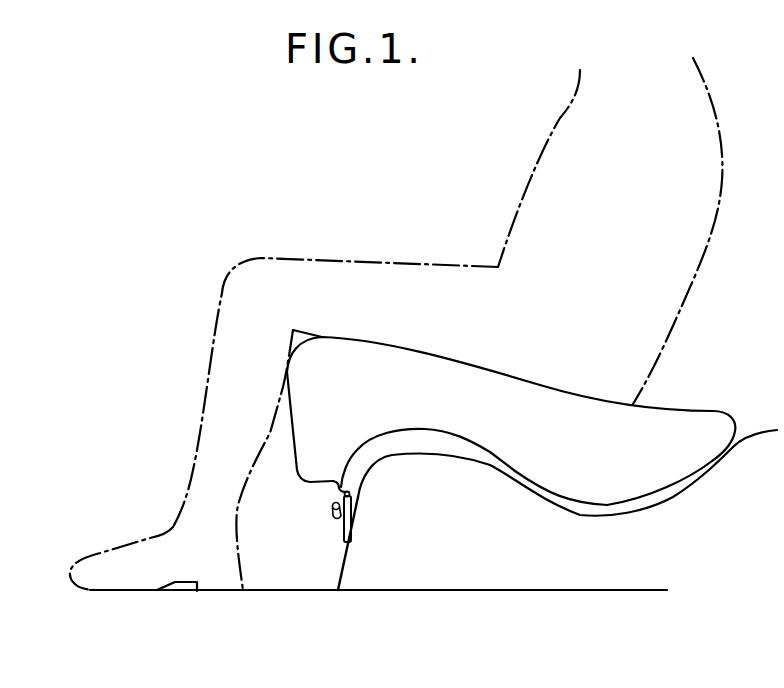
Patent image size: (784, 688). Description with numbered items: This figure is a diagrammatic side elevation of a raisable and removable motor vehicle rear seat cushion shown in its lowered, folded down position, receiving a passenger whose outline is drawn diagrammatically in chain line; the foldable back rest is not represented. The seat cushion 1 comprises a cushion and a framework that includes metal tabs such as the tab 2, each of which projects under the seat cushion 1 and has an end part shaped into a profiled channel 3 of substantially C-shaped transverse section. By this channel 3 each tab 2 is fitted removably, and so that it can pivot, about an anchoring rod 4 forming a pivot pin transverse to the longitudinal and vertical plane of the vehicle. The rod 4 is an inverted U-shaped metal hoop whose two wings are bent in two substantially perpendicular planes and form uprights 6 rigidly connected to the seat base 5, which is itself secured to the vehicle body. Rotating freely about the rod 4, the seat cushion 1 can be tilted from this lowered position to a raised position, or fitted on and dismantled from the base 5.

The seat cushion 1 is at (663, 433).
The metal tab 2 is at (335, 489).
The profiled channel 3 is at (349, 494).
The anchoring rod 4 is at (334, 514).
The seat base 5 is at (430, 457).
The upright 6 is at (353, 531).